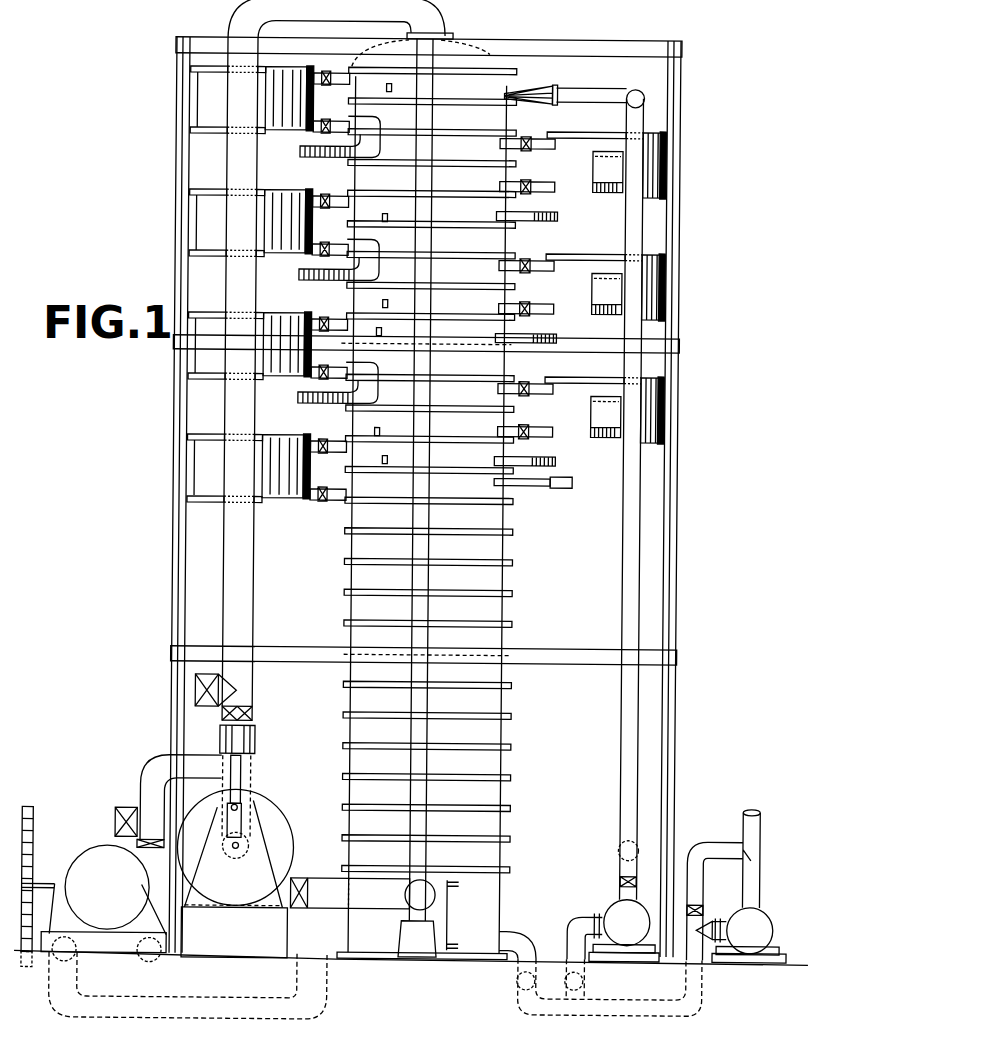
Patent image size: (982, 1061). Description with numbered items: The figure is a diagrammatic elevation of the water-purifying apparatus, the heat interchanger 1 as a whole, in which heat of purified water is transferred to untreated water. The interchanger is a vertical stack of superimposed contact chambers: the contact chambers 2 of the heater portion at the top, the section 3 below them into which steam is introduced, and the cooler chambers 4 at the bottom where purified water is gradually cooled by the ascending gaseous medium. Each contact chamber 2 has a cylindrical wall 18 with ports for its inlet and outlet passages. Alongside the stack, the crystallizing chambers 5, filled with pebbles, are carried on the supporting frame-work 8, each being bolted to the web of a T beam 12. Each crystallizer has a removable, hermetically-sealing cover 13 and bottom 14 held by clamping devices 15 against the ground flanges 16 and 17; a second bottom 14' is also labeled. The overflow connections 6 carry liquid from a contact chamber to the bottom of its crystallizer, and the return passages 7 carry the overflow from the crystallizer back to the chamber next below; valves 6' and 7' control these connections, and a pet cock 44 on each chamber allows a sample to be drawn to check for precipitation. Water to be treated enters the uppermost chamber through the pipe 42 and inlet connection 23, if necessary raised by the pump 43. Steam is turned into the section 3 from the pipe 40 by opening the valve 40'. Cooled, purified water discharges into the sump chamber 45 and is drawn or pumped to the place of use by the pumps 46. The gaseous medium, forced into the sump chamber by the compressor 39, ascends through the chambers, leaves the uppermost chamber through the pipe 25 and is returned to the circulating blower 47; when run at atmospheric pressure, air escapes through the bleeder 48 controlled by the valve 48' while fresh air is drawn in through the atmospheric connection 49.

The heat interchanger 1 is at (410, 975).
The contact chambers 2 is at (430, 265).
The steam section 3 is at (426, 517).
The cooler chambers 4 is at (428, 669).
The crystallizing chambers 5 is at (408, 290).
The overflow connections 6 is at (432, 257).
The valve 6' is at (434, 251).
The return passages 7 is at (428, 300).
The valve 7' is at (429, 290).
The supporting frame-work 8 is at (180, 39).
The T beam 12 is at (178, 572).
The cover 13 is at (453, 281).
The bottom 14 is at (435, 294).
The lower chamber 14' is at (206, 330).
The clamping devices 15 is at (574, 141).
The ground flange 16 is at (187, 71).
The ground flange 17 is at (187, 132).
The cylindrical wall 18 is at (191, 232).
The inlet connection 23 is at (525, 90).
The pipe 25 is at (337, 354).
The compressor 39 is at (94, 886).
The pipe 40 is at (552, 475).
The valve 40' is at (580, 495).
The pipe 42 is at (593, 91).
The pump 43 is at (613, 930).
The pet cock 44 is at (390, 330).
The sump chamber 45 is at (488, 921).
The pumps 46 is at (736, 886).
The circulating blower 47 is at (294, 874).
The bleeder 48 is at (221, 681).
The valve 48' is at (220, 772).
The atmospheric connection 49 is at (118, 815).